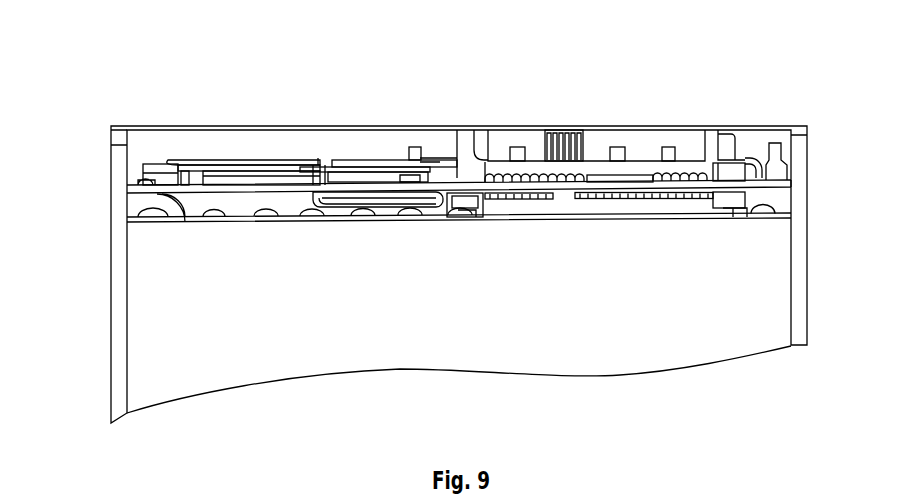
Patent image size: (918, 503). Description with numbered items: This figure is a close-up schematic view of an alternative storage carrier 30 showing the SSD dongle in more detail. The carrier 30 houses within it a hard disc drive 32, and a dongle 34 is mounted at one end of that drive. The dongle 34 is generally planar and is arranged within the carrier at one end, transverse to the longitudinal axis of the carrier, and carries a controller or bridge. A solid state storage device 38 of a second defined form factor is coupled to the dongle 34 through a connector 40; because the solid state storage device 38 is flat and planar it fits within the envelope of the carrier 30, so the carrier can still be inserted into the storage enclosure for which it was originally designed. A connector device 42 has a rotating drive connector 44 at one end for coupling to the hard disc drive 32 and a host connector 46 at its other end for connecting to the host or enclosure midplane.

The carrier 30 is at (100, 368).
The hard disc drive 32 is at (769, 298).
The dongle 34 is at (762, 158).
The solid state storage device 38 is at (325, 170).
The connector 40 is at (145, 177).
The connector device 42 is at (577, 128).
The rotating drive connector 44 is at (670, 207).
The host connector 46 is at (534, 128).